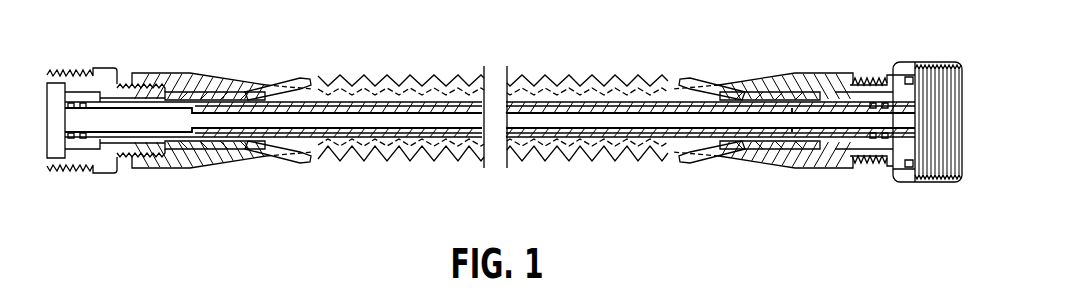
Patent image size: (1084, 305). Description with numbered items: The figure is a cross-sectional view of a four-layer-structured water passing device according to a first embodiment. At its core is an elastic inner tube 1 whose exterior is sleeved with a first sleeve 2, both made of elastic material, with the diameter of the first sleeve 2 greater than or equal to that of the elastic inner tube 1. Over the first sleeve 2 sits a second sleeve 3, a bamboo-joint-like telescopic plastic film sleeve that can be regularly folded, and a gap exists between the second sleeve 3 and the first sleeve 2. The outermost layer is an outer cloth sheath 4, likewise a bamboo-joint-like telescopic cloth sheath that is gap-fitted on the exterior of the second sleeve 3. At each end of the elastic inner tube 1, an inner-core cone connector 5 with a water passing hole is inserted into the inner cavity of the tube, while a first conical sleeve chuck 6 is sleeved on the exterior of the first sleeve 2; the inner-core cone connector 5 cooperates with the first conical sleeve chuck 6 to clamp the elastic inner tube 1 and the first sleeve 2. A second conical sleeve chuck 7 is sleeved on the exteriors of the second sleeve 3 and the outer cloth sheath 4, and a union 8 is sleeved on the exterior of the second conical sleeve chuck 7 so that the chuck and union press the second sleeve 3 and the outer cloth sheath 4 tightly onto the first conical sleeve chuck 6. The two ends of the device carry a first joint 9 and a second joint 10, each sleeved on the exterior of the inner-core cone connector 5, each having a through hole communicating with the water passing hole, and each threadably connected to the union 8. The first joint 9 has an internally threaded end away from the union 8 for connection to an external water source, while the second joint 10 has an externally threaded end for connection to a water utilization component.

The elastic inner tube 1 is at (320, 107).
The first sleeve 2 is at (365, 103).
The second sleeve 3 is at (442, 90).
The outer cloth sheath 4 is at (548, 92).
The inner-core cone connector 5 is at (108, 135).
The first conical sleeve chuck 6 is at (195, 148).
The second conical sleeve chuck 7 is at (245, 158).
The union 8 is at (213, 78).
The first joint 9 is at (930, 62).
The second joint 10 is at (100, 68).